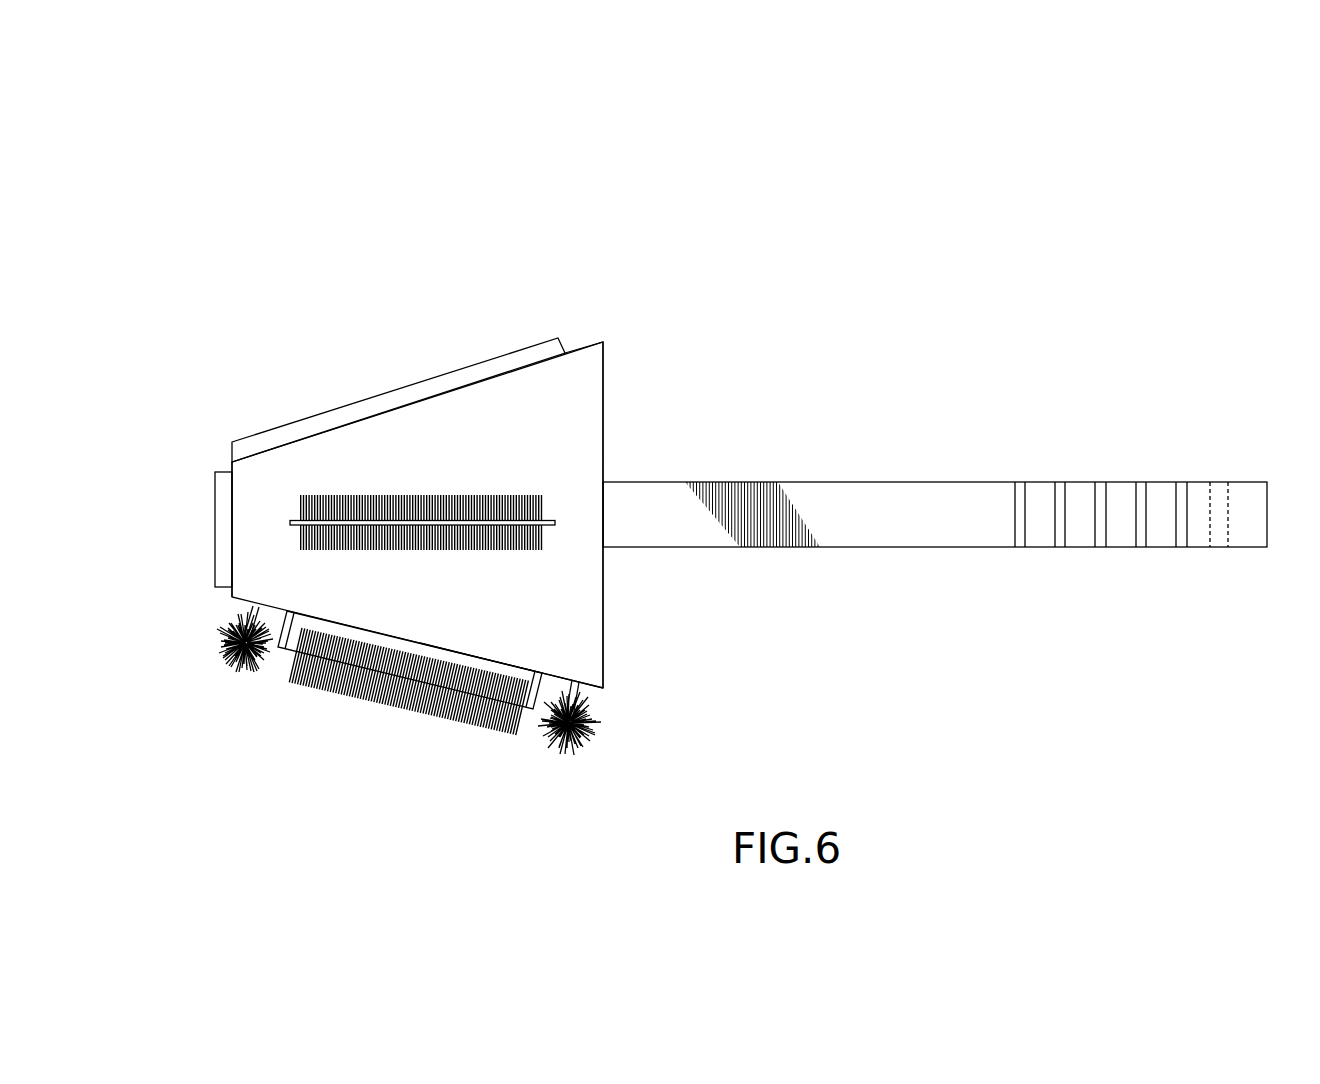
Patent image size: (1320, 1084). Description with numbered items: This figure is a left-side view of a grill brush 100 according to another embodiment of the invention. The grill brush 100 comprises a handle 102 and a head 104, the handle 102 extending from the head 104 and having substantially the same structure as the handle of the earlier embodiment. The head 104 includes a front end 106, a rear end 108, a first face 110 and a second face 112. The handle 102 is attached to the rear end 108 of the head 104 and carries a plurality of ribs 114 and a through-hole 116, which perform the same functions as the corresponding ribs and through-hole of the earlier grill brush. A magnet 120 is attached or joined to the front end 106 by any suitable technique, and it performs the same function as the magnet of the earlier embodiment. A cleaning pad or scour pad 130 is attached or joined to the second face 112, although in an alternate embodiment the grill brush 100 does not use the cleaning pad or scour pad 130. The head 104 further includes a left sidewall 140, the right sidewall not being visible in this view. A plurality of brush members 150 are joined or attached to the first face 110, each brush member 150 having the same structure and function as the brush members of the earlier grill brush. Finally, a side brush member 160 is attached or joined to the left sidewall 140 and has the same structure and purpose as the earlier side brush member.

The grill brush 100 is at (665, 238).
The handle 102 is at (862, 482).
The head 104 is at (340, 337).
The front end 106 is at (232, 595).
The rear end 108 is at (603, 628).
The first face 110 is at (603, 688).
The second face 112 is at (592, 342).
The ribs 114 is at (1060, 546).
The through-hole 116 is at (1223, 493).
The magnet 120 is at (215, 530).
The cleaning pad or scour pad 130 is at (277, 427).
The left sidewall 140 is at (588, 431).
The brush members 150 is at (228, 657).
The side brush member 160 is at (368, 542).